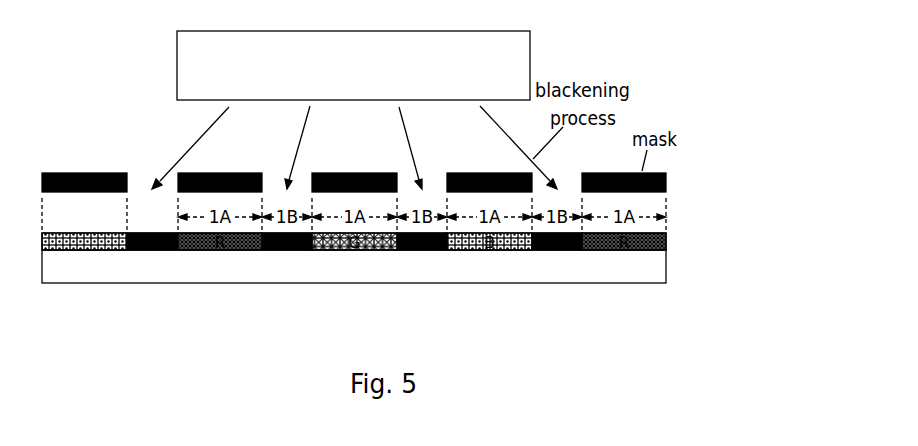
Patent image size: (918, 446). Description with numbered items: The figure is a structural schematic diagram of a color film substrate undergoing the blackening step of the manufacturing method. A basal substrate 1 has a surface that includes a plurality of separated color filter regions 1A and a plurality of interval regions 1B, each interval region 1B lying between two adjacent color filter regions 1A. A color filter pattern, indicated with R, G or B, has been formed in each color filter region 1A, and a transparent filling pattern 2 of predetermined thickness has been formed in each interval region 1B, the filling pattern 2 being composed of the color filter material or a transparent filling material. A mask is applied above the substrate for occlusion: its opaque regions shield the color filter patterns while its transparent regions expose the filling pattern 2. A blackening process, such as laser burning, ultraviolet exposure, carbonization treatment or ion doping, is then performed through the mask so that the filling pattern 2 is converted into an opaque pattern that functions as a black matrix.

The basal substrate 1 is at (632, 266).
The filling pattern 2 is at (270, 250).
The color filter region 1A is at (42, 217).
The interval region 1B is at (127, 217).